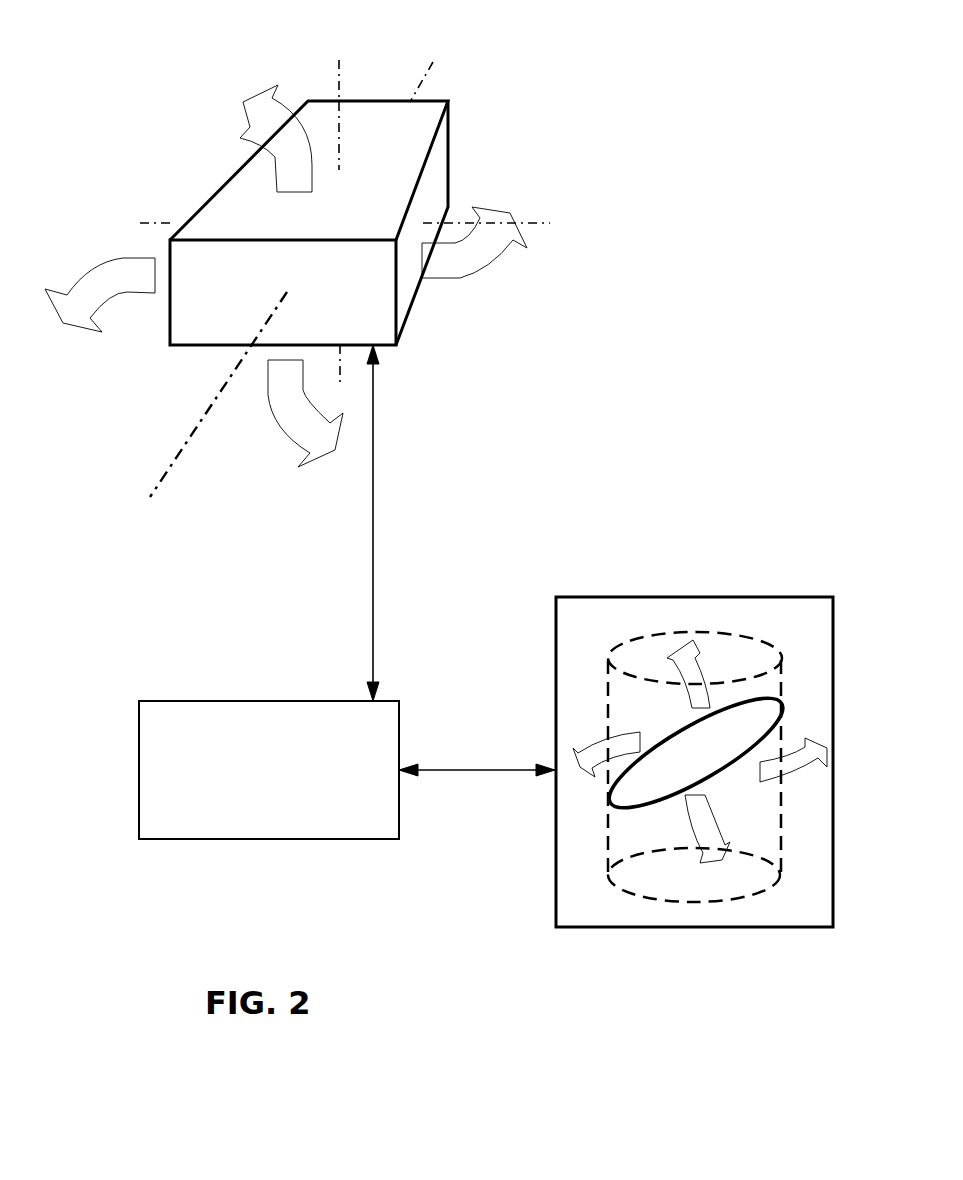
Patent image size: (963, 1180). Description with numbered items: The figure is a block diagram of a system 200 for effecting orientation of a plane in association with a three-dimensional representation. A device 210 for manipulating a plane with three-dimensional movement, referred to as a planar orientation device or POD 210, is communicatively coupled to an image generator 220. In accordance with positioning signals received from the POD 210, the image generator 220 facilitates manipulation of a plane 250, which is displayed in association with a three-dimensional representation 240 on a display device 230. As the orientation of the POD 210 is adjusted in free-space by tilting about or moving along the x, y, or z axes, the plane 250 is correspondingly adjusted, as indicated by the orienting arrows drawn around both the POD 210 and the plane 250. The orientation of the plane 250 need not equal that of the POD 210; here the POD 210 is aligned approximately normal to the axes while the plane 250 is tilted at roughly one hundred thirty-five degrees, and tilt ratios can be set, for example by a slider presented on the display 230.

The system 200 is at (702, 101).
The planar orientation device (POD) 210 is at (448, 133).
The image generator 220 is at (162, 702).
The display device 230 is at (788, 597).
The 3D representation 240 is at (782, 687).
The plane 250 is at (723, 765).